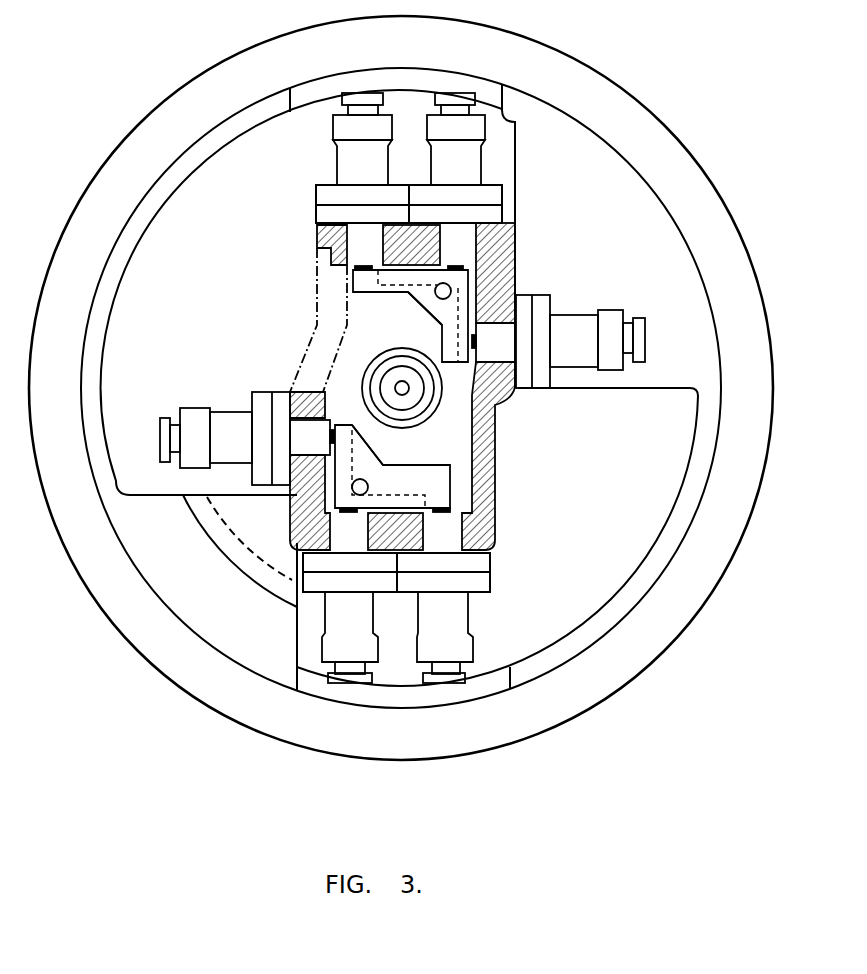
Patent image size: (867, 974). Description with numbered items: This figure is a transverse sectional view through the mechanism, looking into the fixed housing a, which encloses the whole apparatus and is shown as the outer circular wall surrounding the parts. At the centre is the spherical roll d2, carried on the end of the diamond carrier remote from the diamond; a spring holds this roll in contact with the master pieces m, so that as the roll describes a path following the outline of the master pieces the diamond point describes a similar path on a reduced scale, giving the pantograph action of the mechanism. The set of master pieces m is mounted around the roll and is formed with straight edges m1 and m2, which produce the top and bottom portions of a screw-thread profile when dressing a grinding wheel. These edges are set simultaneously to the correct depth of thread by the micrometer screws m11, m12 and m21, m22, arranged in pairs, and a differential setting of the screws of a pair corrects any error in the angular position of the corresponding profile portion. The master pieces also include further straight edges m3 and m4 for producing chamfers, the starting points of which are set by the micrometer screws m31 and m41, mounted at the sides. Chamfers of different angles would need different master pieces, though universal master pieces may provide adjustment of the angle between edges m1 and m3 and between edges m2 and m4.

The fixed housing a is at (167, 98).
The spherical roll d2 is at (367, 375).
The master pieces m is at (456, 277).
The straight edge m1 is at (423, 463).
The straight edge m2 is at (373, 295).
The straight edge m3 is at (368, 447).
The straight edge m4 is at (422, 307).
The micrometer screw m11 is at (340, 617).
The micrometer screw m12 is at (440, 630).
The micrometer screw m21 is at (343, 152).
The micrometer screw m22 is at (461, 162).
The micrometer screw m31 is at (223, 427).
The micrometer screw m41 is at (568, 328).